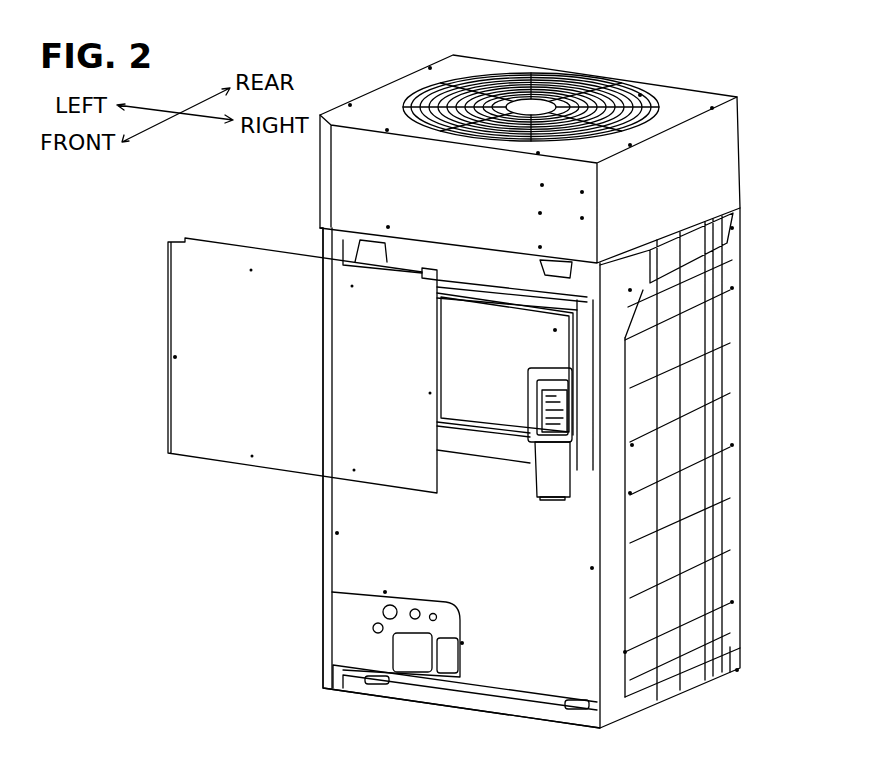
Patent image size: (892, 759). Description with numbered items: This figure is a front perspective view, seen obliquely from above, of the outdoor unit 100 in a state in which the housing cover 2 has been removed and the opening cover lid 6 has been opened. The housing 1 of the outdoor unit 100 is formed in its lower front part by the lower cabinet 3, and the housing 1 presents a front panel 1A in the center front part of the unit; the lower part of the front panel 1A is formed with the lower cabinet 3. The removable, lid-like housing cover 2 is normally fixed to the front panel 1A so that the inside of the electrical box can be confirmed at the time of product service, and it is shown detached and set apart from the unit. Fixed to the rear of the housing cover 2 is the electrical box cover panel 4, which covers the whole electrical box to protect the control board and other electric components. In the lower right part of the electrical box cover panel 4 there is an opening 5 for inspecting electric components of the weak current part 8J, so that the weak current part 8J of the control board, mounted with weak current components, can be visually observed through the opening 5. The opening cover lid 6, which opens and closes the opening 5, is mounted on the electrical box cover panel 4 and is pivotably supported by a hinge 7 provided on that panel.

The outdoor unit 100 is at (732, 101).
The housing 1 is at (346, 179).
The front panel 1A is at (373, 583).
The housing cover 2 is at (160, 343).
The lower cabinet 3 is at (367, 558).
The electrical box cover panel 4 is at (506, 326).
The opening 5 is at (569, 436).
The opening cover lid 6 is at (558, 510).
The hinge 7 is at (559, 454).
The weak current part 8J is at (571, 415).